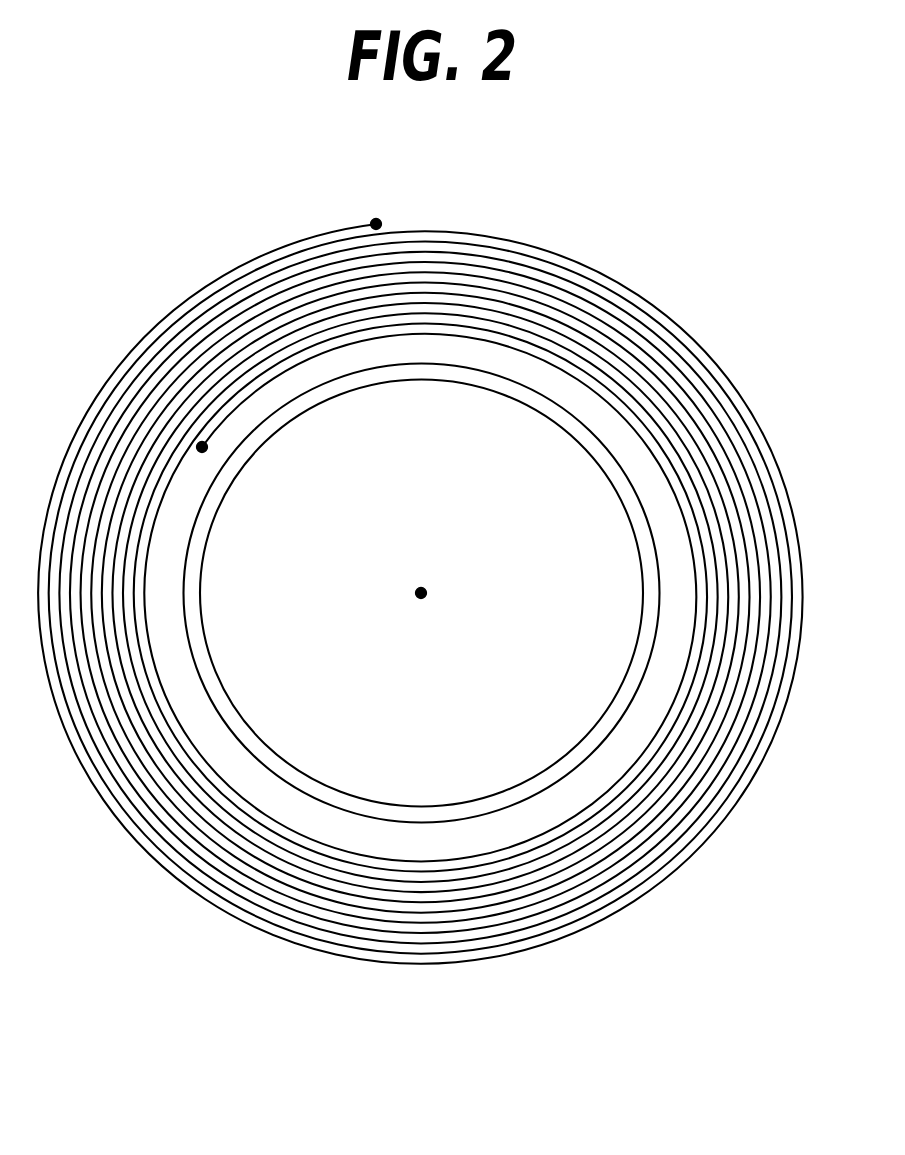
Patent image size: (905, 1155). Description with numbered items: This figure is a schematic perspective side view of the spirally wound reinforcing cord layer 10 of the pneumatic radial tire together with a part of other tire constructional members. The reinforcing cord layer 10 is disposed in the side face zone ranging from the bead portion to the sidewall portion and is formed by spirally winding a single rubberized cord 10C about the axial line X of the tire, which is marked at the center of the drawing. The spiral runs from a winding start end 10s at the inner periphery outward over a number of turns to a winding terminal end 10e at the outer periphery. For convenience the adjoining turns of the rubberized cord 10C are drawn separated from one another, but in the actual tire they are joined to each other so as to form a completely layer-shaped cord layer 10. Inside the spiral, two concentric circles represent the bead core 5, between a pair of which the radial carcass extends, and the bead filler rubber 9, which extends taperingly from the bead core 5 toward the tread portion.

The reinforcing cord layer 10 is at (423, 559).
The rubberized cord 10C is at (157, 320).
The winding terminal end 10e is at (377, 224).
The winding start end 10s is at (202, 447).
The bead filler rubber 9 is at (583, 422).
The bead core 5 is at (437, 372).
The axial line X is at (421, 593).